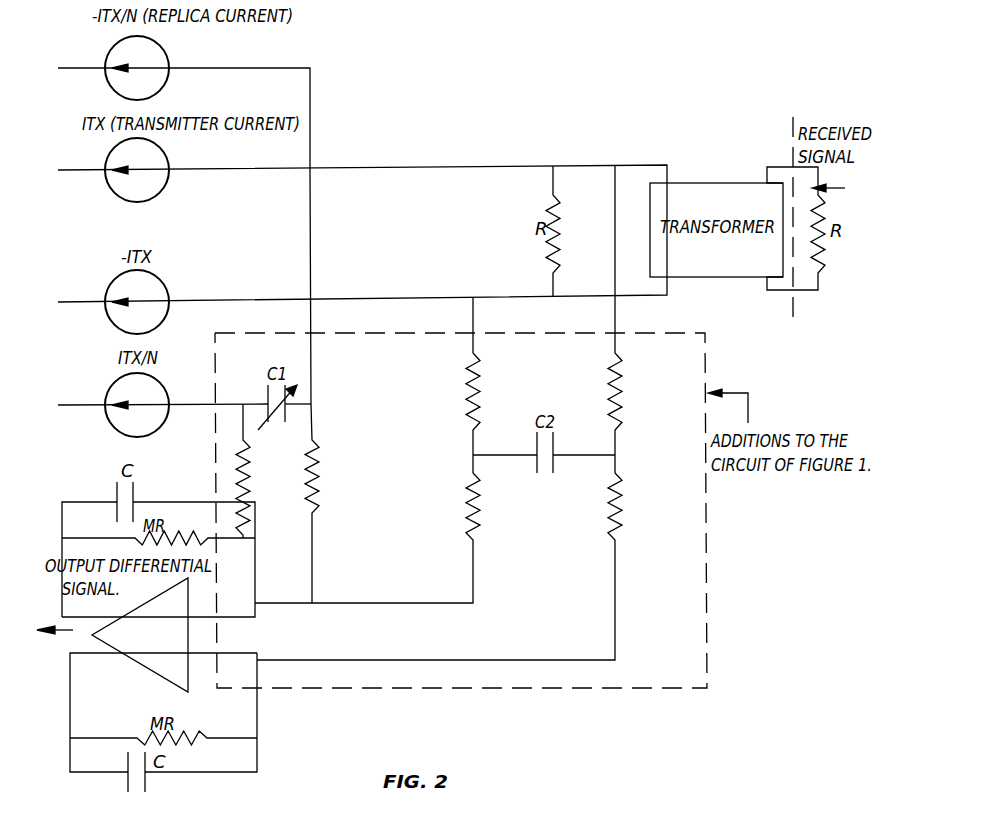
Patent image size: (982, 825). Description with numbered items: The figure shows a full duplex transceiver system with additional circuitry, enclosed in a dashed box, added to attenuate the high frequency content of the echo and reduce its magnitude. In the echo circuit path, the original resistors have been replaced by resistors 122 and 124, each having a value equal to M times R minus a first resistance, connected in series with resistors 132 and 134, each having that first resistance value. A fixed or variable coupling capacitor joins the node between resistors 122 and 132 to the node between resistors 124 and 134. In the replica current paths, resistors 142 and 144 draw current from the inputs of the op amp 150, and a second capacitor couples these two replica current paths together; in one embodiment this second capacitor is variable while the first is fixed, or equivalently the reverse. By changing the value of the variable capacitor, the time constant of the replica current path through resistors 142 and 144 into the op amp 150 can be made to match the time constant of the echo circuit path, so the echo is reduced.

The resistor 122 is at (515, 385).
The resistor 124 is at (651, 319).
The resistor 132 is at (399, 538).
The resistor 134 is at (466, 566).
The resistor 142 is at (263, 471).
The resistor 144 is at (332, 386).
The op amp 150 is at (178, 653).